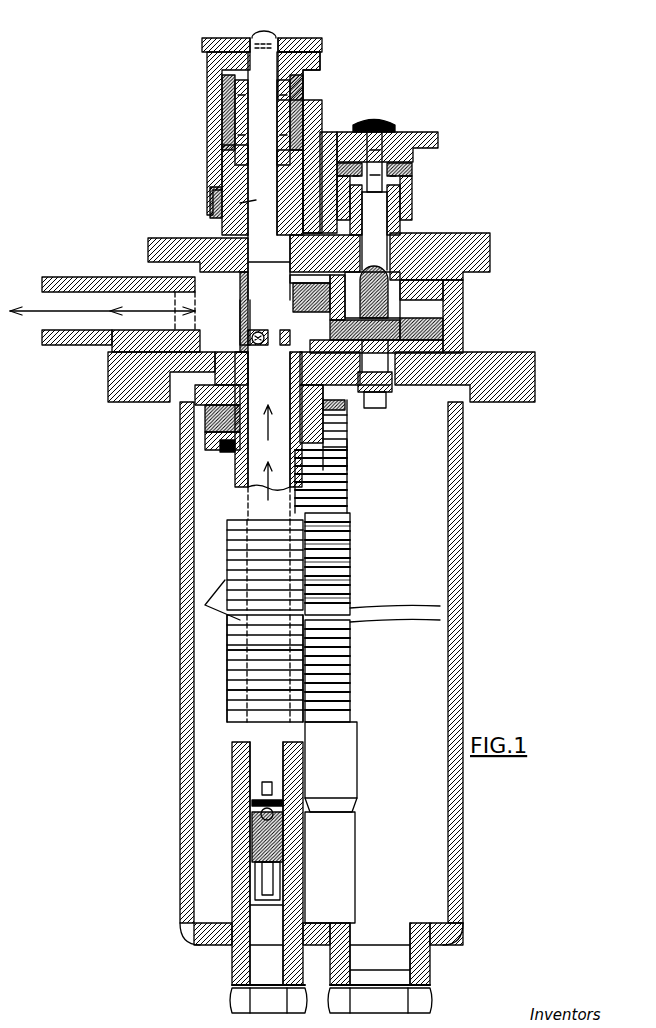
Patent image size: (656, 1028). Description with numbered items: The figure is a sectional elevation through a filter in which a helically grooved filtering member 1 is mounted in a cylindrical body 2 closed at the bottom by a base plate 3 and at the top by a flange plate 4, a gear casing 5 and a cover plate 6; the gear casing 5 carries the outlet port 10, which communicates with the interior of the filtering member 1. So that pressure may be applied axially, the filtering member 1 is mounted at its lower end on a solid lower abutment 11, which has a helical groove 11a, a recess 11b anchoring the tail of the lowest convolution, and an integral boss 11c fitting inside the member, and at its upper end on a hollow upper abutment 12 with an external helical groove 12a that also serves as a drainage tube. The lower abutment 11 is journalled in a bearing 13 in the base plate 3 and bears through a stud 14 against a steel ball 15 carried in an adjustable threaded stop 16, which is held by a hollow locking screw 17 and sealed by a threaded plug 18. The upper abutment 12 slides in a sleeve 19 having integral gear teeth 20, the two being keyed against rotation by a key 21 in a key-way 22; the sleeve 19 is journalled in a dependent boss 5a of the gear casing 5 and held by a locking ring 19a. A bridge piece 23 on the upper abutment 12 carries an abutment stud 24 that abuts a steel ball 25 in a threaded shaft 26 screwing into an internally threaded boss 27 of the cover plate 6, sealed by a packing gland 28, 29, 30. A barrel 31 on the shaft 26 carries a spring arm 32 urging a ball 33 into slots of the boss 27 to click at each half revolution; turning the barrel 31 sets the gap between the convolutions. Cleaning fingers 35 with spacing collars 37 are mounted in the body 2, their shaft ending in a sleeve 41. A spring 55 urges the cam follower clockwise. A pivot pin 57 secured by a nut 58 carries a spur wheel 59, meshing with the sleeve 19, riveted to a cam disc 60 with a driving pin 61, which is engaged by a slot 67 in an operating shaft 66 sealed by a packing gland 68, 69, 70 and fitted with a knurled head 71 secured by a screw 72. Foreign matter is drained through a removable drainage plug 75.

The filtering member 1 is at (240, 600).
The cylindrical body 2 is at (456, 618).
The base plate 3 is at (200, 945).
The flange plate 4 is at (128, 403).
The gear casing 5 is at (465, 316).
The dependent boss 5a is at (215, 432).
The cover plate 6 is at (490, 252).
The outlet port 10 is at (75, 302).
The lower abutment 11 is at (255, 725).
The helical groove 11a is at (240, 710).
The recess 11b is at (240, 680).
The integral boss 11c is at (235, 650).
The upper abutment 12 is at (232, 530).
The external helical groove 12a is at (340, 530).
The bearing 13 is at (232, 910).
The stud 14 is at (262, 788).
The steel ball 15 is at (262, 808).
The adjustable threaded stop 16 is at (262, 838).
The hollow locking screw 17 is at (262, 882).
The threaded plug 18 is at (240, 998).
The sleeve 19 is at (345, 425).
The locking ring 19a is at (218, 452).
The gear teeth 20 is at (110, 360).
The key 21 is at (222, 445).
The key-way 22 is at (242, 345).
The bridge piece 23 is at (220, 418).
The abutment stud 24 is at (270, 400).
The steel ball 25 is at (258, 330).
The threaded shaft 26 is at (212, 205).
The internally threaded boss 27 is at (222, 182).
The packing gland 28 is at (235, 140).
The packing gland 29 is at (222, 115).
The packing gland 30 is at (222, 93).
The barrel 31 is at (205, 160).
The spring arm 32 is at (328, 160).
The ball 33 is at (300, 208).
The cleaning fingers 35 is at (348, 666).
The spacing collars 37 is at (345, 574).
The sleeve 41 is at (345, 767).
The spring 55 is at (290, 284).
The pivot pin 57 is at (400, 380).
The nut 58 is at (388, 405).
The spur wheel 59 is at (465, 345).
The cam disc 60 is at (465, 331).
The driving pin 61 is at (460, 291).
The operating shaft 66 is at (380, 235).
The slot 67 is at (336, 285).
The packing gland 68 is at (410, 210).
The packing gland 69 is at (413, 190).
The packing gland 70 is at (413, 175).
The knurled head 71 is at (438, 140).
The screw 72 is at (375, 118).
The drainage plug 75 is at (390, 975).